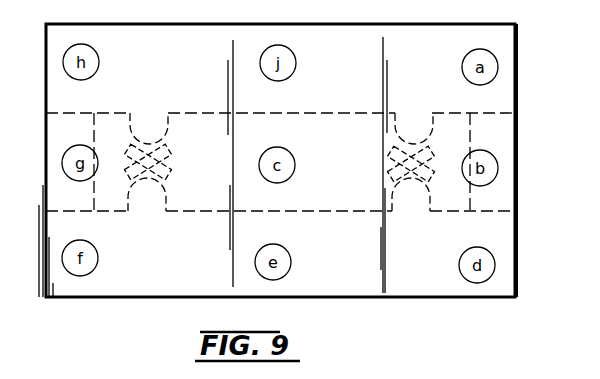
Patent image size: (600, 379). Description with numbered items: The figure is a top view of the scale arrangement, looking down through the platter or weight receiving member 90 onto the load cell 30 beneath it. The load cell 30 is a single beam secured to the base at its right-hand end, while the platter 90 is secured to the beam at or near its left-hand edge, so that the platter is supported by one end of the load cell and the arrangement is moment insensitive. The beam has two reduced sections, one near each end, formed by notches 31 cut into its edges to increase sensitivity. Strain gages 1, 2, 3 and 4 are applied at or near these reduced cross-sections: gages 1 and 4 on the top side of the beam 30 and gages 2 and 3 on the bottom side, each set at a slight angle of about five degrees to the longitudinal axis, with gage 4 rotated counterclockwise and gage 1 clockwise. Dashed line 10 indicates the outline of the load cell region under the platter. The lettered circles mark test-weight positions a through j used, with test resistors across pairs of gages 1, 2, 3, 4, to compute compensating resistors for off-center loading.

The strain gage 1 is at (425, 158).
The strain gage 2 is at (393, 180).
The strain gage 3 is at (160, 175).
The strain gage 4 is at (163, 153).
The substrate 10 is at (323, 113).
The load cell 30 is at (492, 116).
The notch 31 is at (147, 135).
The platter 90 is at (517, 183).